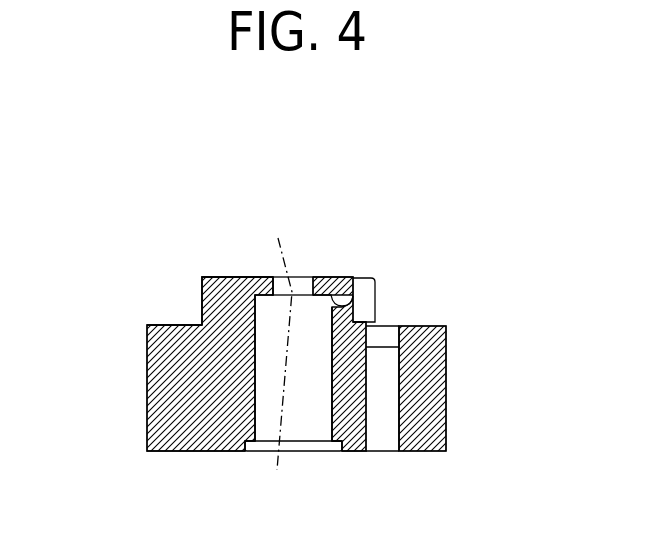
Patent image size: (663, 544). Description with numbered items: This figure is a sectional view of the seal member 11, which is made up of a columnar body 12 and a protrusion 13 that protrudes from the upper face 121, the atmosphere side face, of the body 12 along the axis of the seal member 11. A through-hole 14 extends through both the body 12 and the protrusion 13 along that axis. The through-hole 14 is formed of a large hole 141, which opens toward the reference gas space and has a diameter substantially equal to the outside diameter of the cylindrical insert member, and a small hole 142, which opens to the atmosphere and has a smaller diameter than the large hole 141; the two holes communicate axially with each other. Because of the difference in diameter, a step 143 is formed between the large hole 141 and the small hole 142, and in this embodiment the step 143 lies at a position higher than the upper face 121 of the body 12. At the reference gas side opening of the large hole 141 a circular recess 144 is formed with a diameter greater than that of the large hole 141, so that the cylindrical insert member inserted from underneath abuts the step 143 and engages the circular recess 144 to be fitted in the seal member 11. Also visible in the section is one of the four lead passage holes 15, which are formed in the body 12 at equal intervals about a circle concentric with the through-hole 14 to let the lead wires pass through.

The seal member 11 is at (280, 308).
The body 12 is at (136, 370).
The upper face 121 is at (168, 323).
The protrusion 13 is at (192, 288).
The through-hole 14 is at (336, 340).
The large hole 141 is at (300, 310).
The small hole 142 is at (333, 340).
The step 143 is at (352, 300).
The circular recess 144 is at (322, 452).
The lead passage holes 15 is at (397, 340).